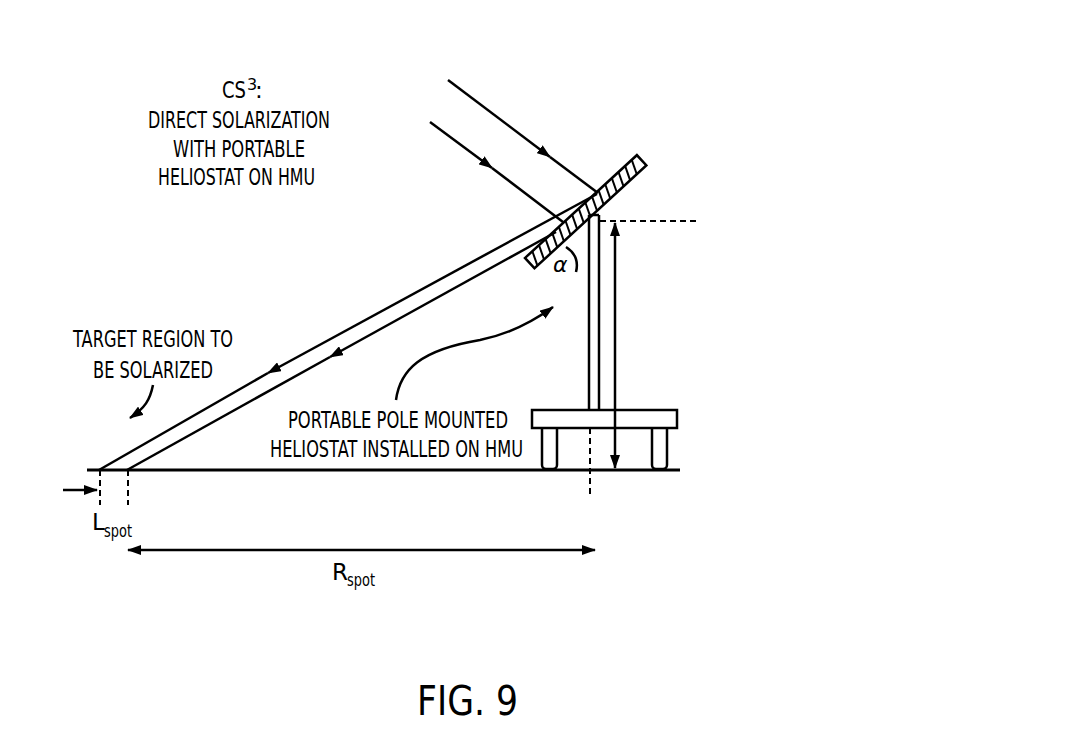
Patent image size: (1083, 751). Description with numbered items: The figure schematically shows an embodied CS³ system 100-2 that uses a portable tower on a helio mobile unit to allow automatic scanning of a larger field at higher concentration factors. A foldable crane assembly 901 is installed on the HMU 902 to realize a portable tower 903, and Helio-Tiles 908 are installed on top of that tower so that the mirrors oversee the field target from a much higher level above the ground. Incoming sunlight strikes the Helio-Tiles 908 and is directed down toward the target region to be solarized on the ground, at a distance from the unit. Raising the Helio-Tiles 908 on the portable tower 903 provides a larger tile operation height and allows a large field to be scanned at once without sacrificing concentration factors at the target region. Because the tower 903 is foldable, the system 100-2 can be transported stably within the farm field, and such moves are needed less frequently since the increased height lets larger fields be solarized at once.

The CS³ system 100-2 is at (773, 70).
The foldable crane assembly 901 is at (637, 182).
The Helio-Tiles 908 is at (622, 133).
The portable tower 903 is at (732, 341).
The HMU 902 is at (690, 417).